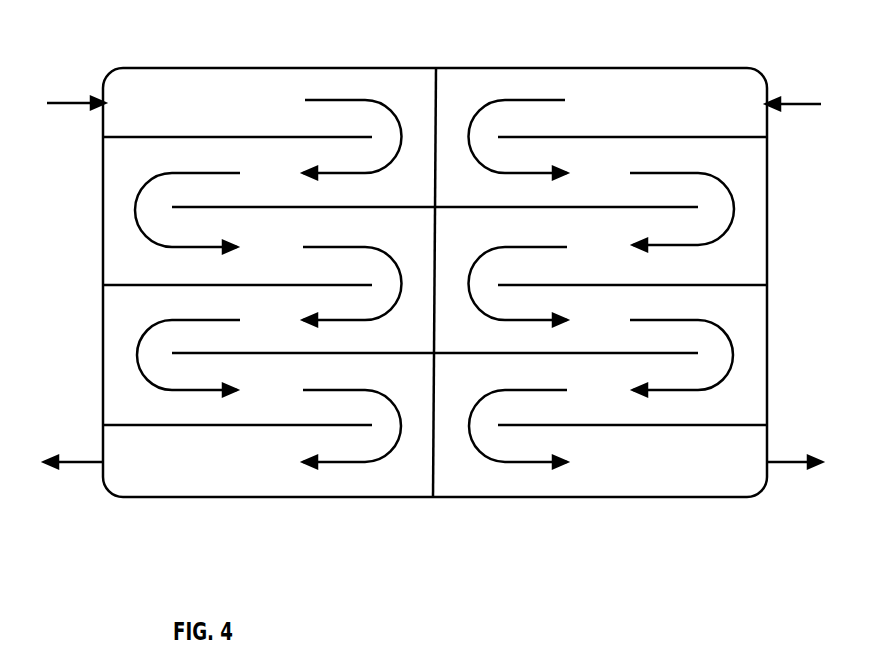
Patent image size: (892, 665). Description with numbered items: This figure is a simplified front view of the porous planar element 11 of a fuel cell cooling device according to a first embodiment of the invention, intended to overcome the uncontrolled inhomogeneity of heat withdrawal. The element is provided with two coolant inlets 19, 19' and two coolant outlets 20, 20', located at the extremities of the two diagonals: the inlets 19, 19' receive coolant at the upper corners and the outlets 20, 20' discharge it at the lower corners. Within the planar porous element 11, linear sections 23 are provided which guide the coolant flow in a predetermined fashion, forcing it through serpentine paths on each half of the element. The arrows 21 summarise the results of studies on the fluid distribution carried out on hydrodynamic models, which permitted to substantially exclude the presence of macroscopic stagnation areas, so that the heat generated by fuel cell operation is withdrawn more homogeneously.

The housing 11 is at (218, 66).
The linear sections 23 is at (417, 200).
The arrows 21 is at (137, 352).
The inlet 19' is at (69, 143).
The inlet 19 is at (803, 143).
The outlet 20' is at (68, 424).
The outlet 20 is at (801, 424).